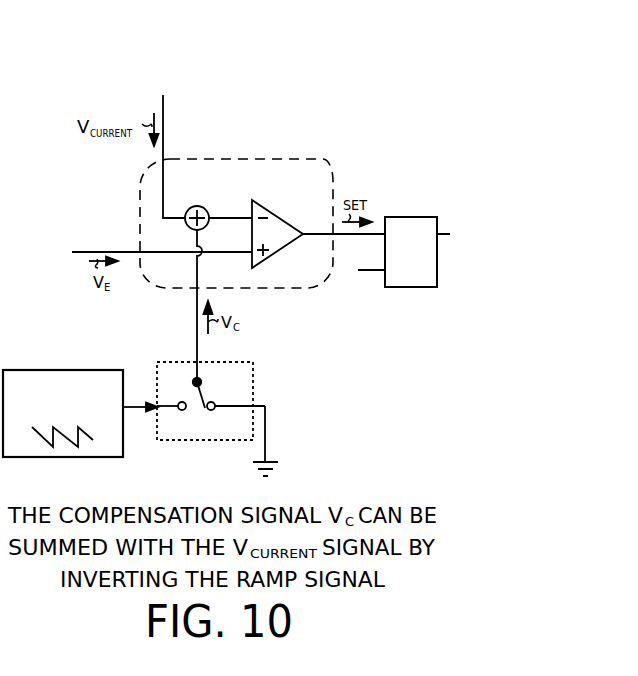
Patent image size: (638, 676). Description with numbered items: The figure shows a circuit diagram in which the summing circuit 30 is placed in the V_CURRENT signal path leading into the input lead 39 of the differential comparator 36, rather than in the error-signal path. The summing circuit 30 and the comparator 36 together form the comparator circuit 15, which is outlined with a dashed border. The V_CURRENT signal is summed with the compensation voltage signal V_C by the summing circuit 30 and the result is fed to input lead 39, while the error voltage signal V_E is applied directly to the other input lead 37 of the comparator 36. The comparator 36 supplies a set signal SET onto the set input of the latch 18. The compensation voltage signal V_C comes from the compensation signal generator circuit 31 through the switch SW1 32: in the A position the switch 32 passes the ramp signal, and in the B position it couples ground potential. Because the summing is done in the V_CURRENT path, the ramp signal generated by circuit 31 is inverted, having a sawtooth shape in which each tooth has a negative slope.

The comparator circuit 15 is at (278, 158).
The summing circuit 30 is at (195, 205).
The non-inverting input lead 39 is at (248, 215).
The non-inverting input lead 37 is at (251, 256).
The differential comparator 36 is at (274, 215).
The latch 18 is at (407, 215).
The compensation signal generator circuit 31 is at (59, 369).
The switch SW1 32 is at (253, 378).